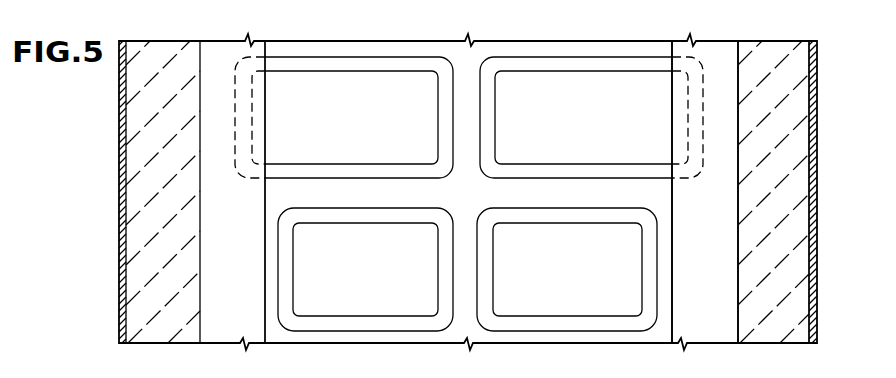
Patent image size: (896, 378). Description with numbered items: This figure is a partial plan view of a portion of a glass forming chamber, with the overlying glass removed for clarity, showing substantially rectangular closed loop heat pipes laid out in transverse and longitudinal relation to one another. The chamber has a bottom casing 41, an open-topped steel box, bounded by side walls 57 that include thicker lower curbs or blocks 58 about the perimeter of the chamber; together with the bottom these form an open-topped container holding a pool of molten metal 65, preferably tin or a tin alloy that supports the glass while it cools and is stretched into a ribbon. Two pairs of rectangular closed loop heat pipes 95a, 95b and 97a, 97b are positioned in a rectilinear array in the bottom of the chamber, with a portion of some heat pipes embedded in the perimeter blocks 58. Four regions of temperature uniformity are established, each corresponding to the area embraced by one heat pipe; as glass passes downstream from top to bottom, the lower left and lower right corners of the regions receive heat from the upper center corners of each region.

The bottom casing 41 is at (815, 228).
The side walls 57 is at (765, 41).
The lower curbs or blocks 58 is at (723, 47).
The pool of molten metal 65 is at (482, 201).
The rectangular closed loop heat pipe 95a is at (355, 57).
The rectangular closed loop heat pipe 95b is at (560, 58).
The rectangular closed loop heat pipe 97a is at (348, 331).
The rectangular closed loop heat pipe 97b is at (573, 331).